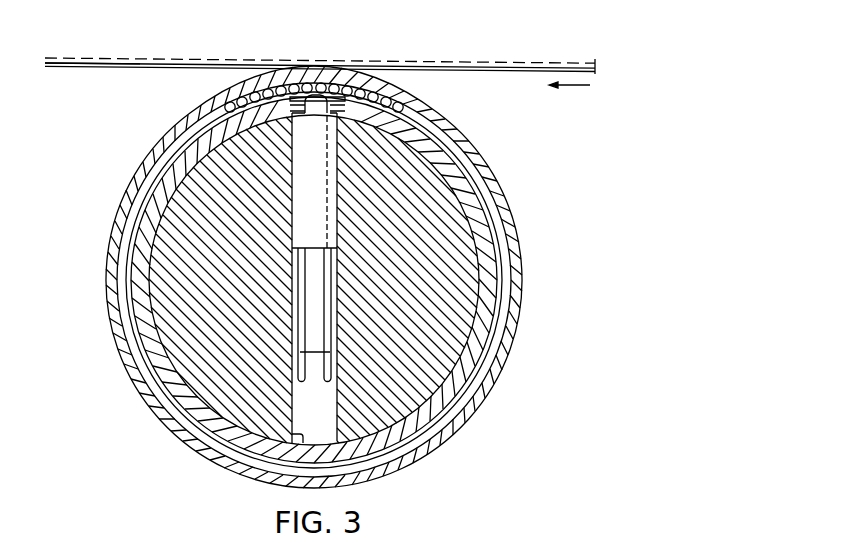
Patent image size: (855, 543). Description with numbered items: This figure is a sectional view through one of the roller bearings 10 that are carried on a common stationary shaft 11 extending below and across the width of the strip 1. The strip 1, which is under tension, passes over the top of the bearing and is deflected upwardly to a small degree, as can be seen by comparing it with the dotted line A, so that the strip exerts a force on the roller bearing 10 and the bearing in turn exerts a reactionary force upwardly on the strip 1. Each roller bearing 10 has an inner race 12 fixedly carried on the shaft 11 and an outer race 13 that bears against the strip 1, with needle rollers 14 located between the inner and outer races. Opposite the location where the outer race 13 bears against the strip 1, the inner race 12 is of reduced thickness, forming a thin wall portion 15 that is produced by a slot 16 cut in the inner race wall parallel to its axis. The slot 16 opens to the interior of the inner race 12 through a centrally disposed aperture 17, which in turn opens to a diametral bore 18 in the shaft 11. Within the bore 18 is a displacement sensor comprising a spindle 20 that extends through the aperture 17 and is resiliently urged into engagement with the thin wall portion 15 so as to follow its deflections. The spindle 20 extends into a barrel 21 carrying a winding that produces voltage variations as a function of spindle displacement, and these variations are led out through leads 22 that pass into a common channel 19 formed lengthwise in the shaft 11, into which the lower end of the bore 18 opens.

The strip 1 is at (403, 65).
The dotted line A is at (130, 63).
The roller bearing 10 is at (527, 310).
The stationary shaft 11 is at (480, 252).
The inner race 12 is at (483, 218).
The outer race 13 is at (497, 180).
The needle rollers 14 is at (228, 95).
The thin wall portion 15 is at (331, 96).
The slot 16 is at (240, 112).
The aperture 17 is at (350, 110).
The diametral bore 18 is at (299, 140).
The channel 19 is at (282, 462).
The spindle 20 is at (310, 98).
The barrel 21 is at (320, 233).
The leads 22 is at (318, 384).